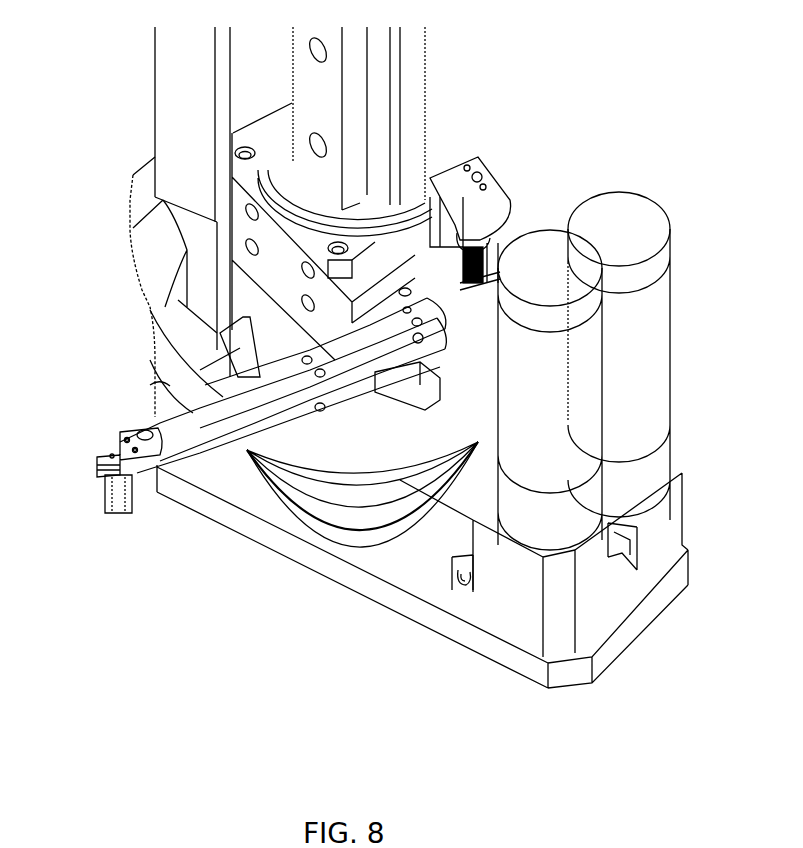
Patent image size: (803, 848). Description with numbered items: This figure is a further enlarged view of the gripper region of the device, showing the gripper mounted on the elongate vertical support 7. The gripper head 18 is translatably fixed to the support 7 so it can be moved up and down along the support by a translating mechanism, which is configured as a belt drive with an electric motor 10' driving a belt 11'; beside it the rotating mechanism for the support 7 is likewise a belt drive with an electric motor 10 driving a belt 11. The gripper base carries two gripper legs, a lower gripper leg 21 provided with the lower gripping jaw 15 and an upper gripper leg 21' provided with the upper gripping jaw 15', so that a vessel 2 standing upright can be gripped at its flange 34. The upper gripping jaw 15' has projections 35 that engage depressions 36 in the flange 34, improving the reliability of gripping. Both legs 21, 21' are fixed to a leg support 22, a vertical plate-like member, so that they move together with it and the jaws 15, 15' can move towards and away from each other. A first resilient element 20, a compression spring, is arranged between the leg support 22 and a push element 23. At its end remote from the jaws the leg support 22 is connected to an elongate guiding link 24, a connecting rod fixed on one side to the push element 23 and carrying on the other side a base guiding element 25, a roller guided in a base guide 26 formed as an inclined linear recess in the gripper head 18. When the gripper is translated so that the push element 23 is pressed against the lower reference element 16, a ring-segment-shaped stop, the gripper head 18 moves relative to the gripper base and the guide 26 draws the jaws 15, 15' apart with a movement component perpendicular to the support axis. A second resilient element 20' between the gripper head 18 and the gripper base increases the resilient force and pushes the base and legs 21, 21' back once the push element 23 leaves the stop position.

The vertical support 7 is at (163, 53).
The gripper head 18 is at (237, 195).
The lower reference element 16 is at (158, 253).
The upper gripper leg 21' is at (164, 325).
The upper gripping jaw 15' is at (127, 350).
The leg support 22 is at (477, 213).
The second resilient element 20' is at (515, 213).
The first resilient element 20 is at (541, 218).
The electric motor 10 is at (647, 356).
The electric motor 10' is at (609, 390).
The belt 11 is at (362, 528).
The belt 11' is at (362, 555).
The push element 23 is at (457, 367).
The lower gripping jaw 15 is at (271, 436).
The lower gripper leg 21 is at (323, 440).
The guiding link 24 is at (421, 338).
The base guiding element 25 is at (405, 290).
The base guide 26 is at (423, 268).
The flange 34 is at (110, 453).
The projection 35 is at (135, 448).
The depression 36 is at (107, 473).
The vessel 2 is at (103, 493).